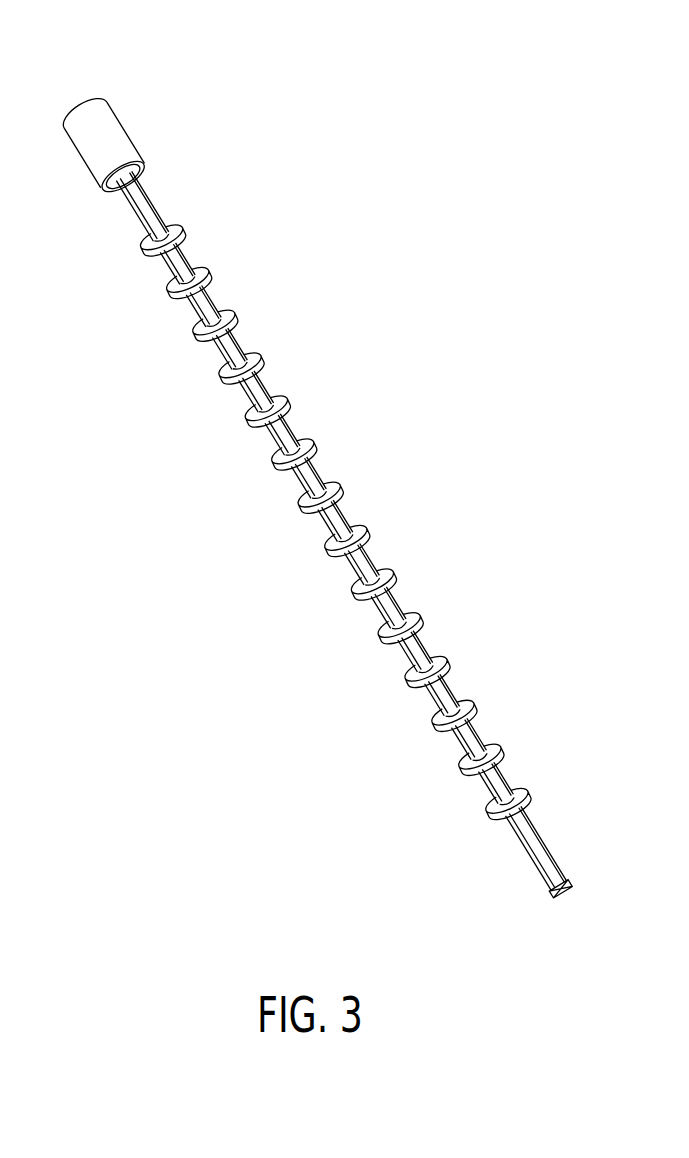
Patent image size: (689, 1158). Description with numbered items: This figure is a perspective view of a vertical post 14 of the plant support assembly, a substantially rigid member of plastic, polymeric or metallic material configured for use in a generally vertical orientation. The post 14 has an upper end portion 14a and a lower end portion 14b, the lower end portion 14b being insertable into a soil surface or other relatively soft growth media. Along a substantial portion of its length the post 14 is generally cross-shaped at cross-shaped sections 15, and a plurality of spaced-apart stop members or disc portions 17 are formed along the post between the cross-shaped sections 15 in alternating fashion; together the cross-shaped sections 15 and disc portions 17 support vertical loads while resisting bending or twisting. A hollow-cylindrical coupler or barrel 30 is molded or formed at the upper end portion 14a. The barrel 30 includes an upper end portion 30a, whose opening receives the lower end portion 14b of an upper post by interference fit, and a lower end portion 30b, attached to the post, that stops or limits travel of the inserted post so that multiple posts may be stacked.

The vertical post 14 is at (312, 570).
The upper end portion 14a is at (94, 221).
The lower end portion 14b is at (528, 895).
The cross-shaped section 15 is at (243, 400).
The disc portion 17 is at (300, 512).
The barrel 30 is at (139, 129).
The upper end portion of barrel 30a is at (106, 78).
The lower end portion of barrel 30b is at (155, 172).